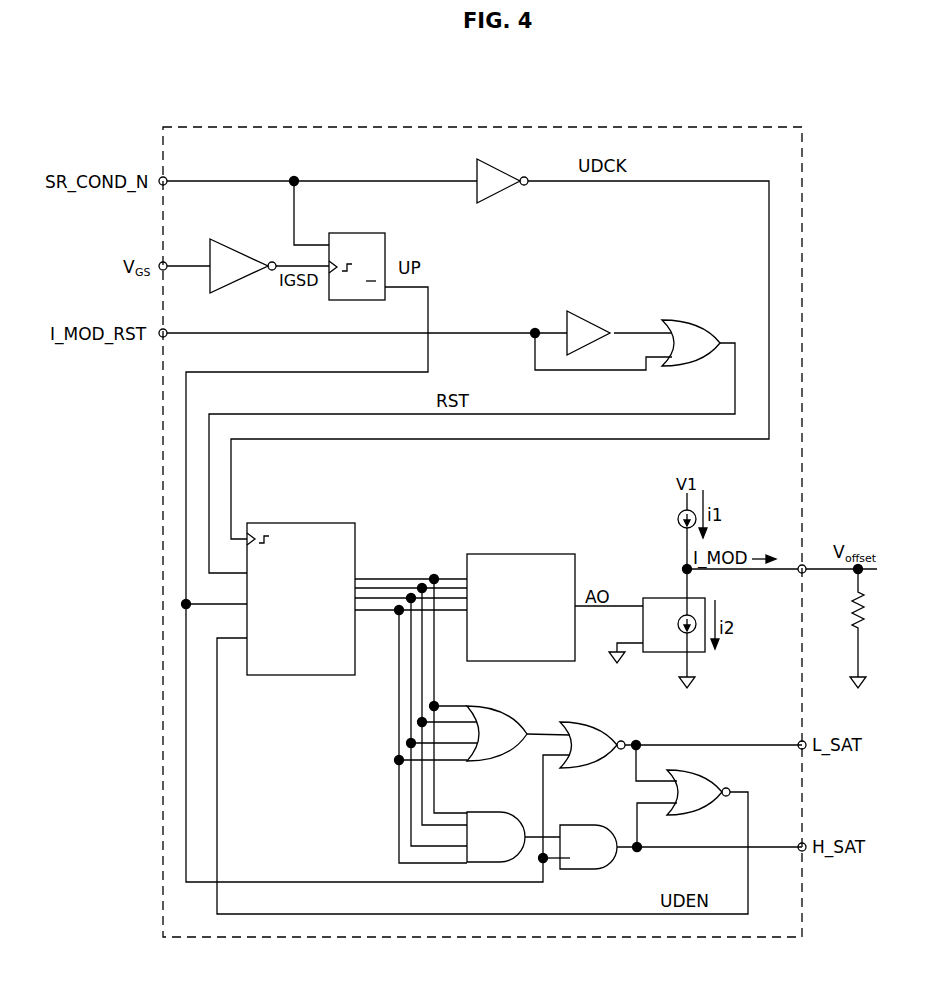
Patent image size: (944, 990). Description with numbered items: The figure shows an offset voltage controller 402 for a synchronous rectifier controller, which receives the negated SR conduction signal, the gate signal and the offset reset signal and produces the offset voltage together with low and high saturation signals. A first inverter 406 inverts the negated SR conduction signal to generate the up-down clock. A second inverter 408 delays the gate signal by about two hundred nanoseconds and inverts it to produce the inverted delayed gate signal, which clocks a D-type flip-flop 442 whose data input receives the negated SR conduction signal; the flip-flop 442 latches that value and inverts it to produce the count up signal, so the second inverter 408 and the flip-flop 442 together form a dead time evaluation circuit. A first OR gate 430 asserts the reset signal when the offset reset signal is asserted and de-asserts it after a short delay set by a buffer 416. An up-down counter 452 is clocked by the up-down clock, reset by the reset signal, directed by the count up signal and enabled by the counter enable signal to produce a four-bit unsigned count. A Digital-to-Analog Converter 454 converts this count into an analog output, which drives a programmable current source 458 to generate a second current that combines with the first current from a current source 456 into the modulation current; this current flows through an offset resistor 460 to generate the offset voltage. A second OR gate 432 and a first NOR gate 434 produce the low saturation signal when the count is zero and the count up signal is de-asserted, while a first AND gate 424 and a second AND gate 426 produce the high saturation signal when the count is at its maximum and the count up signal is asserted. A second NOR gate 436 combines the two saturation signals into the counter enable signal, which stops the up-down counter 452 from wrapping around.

The offset voltage controller 402 is at (262, 127).
The first inverter 406 is at (505, 172).
The second inverter 408 is at (238, 283).
The buffer 416 is at (591, 328).
The first AND gate 424 is at (492, 812).
The second AND gate 426 is at (583, 825).
The first OR gate 430 is at (689, 320).
The second OR gate 432 is at (508, 715).
The first NOR gate 434 is at (601, 722).
The second NOR gate 436 is at (708, 771).
The D-type flip-flop 442 is at (351, 301).
The up-down counter 452 is at (288, 676).
The Digital-to-Analog Converter 454 is at (512, 554).
The current source 456 is at (678, 519).
The programmable current source 458 is at (678, 598).
The offset resistor 460 is at (853, 613).